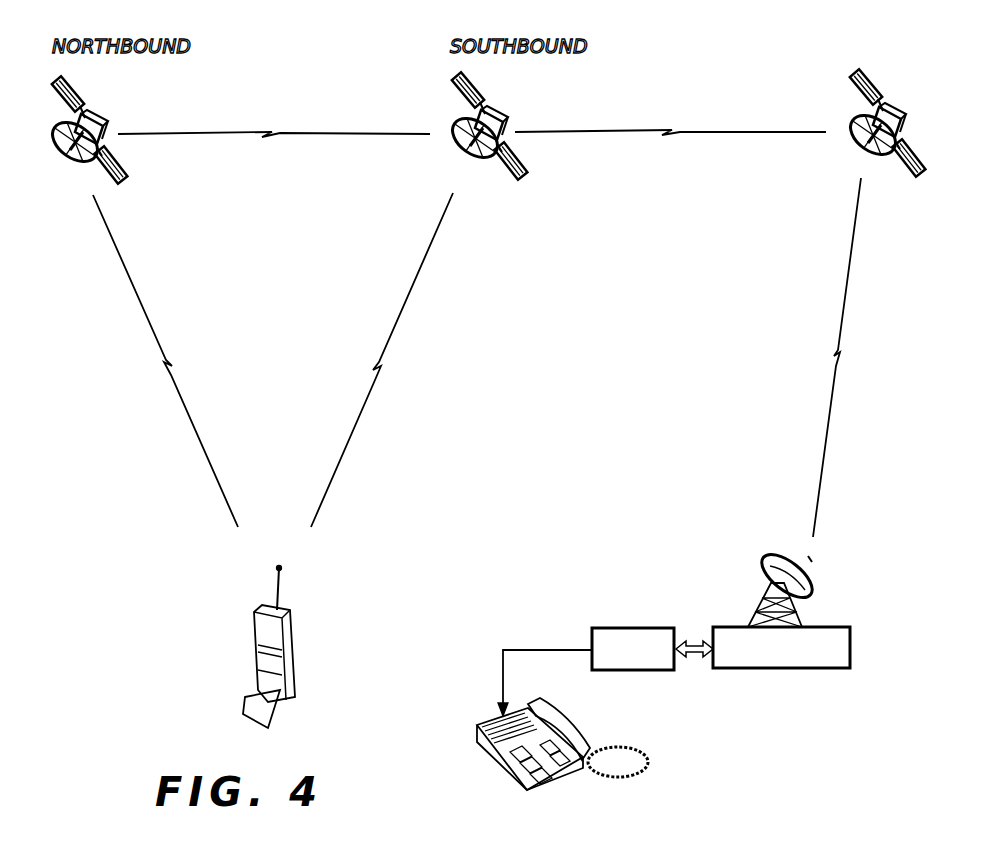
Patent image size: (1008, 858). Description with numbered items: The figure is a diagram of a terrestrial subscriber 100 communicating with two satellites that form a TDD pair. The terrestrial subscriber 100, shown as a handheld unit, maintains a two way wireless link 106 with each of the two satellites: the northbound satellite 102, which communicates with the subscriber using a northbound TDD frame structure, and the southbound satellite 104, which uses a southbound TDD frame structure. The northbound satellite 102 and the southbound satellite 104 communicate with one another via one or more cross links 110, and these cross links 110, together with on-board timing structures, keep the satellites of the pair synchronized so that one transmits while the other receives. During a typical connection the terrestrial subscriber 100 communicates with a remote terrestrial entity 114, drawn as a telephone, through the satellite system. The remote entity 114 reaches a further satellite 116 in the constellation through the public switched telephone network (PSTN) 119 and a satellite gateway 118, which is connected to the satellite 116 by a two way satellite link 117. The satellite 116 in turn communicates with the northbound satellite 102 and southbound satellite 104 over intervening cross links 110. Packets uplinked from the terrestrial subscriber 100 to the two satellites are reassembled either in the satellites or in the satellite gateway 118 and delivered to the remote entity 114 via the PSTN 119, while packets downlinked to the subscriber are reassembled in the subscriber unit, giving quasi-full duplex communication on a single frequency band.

The terrestrial subscriber 100 is at (254, 636).
The northbound satellite 102 is at (86, 86).
The southbound satellite 104 is at (489, 72).
The two way wireless link 106 is at (130, 284).
The cross links 110 is at (345, 134).
The remote terrestrial entity 114 is at (486, 766).
The satellite 116 is at (887, 70).
The two way satellite link 117 is at (848, 274).
The satellite gateway 118 is at (781, 669).
The public switched telephone network (PSTN) 119 is at (633, 671).